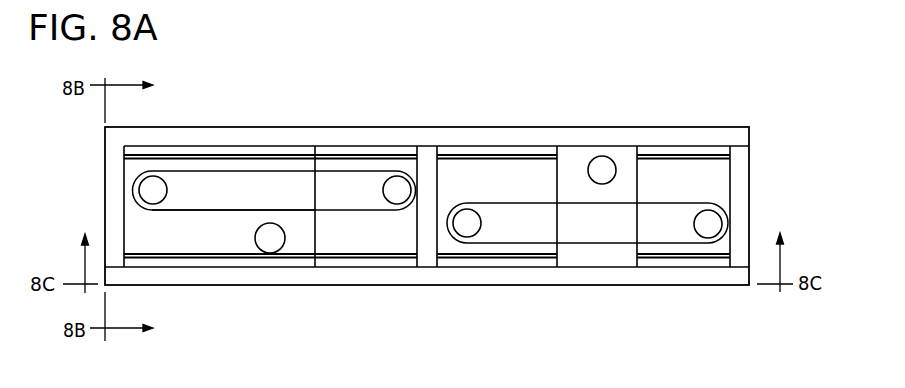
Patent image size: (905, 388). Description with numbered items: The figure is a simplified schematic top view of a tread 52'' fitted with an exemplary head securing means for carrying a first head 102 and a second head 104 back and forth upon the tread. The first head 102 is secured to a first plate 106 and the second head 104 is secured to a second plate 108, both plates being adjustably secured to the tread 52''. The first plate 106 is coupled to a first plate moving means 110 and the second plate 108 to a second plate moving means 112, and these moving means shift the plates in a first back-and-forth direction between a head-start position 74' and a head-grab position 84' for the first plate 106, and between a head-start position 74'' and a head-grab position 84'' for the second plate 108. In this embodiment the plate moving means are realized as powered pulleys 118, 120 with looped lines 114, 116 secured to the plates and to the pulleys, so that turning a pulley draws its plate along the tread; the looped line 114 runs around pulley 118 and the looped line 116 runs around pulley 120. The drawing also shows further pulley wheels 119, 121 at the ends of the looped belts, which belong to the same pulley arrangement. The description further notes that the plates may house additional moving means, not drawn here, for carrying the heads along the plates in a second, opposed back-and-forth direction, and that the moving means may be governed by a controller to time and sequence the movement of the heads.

The tread 52'' is at (447, 189).
The first plate 106 is at (286, 154).
The first belt 119 is at (391, 190).
The powered pulley 118 is at (153, 183).
The first plate moving means 110 is at (386, 178).
The looped line 114 is at (190, 211).
The head-grab position 84' is at (270, 130).
The head-start position 74' is at (270, 282).
The first head 102 is at (276, 253).
The looped line 116 is at (513, 203).
The powered pulley 120 is at (466, 219).
The fourth pulley 121 is at (697, 216).
The second head 104 is at (597, 157).
The head-grab position 84'' is at (678, 180).
The head-start position 74'' is at (540, 231).
The second plate 108 is at (627, 249).
The second plate moving means 112 is at (681, 244).